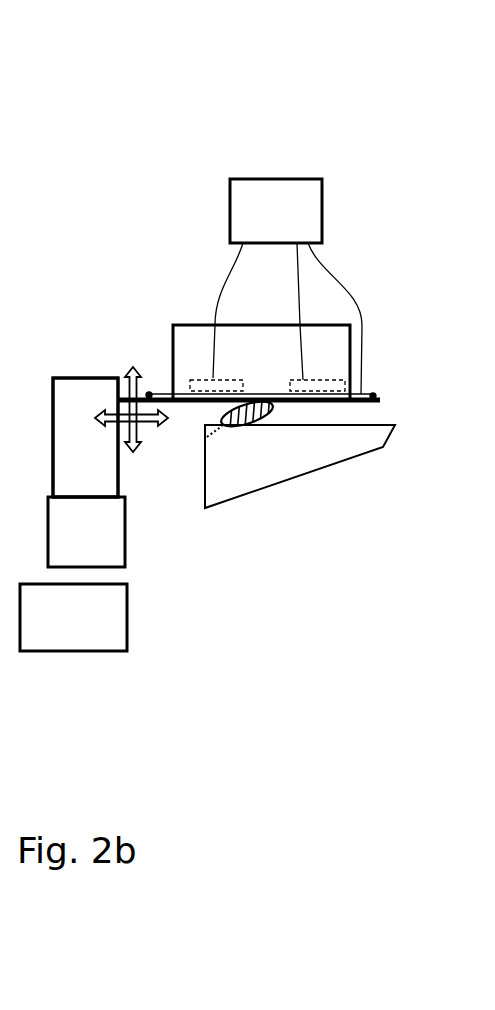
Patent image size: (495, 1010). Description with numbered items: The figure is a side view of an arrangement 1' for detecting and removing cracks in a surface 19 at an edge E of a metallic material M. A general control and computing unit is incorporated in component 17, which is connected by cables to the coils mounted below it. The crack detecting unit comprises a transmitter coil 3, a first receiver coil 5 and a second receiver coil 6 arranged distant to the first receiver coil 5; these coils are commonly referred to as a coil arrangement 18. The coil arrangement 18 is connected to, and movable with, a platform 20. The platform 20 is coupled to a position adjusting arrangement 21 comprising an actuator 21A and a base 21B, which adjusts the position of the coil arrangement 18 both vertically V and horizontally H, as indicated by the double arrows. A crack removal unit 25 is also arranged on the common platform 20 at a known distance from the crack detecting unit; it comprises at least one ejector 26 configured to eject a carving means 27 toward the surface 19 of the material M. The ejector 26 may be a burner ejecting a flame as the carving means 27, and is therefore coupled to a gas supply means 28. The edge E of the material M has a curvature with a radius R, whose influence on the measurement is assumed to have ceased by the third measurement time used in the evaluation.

The arrangement 1' is at (58, 71).
The component 17 is at (243, 215).
The coil arrangement 18 is at (349, 261).
The crack removal unit 25 is at (303, 325).
The first receiver coil 5 is at (228, 378).
The second receiver coil 6 is at (312, 380).
The platform 20 is at (386, 403).
The transmitter coil 3 is at (371, 392).
The ejector 26 is at (271, 414).
The carving means 27 is at (241, 433).
The metallic material M is at (363, 443).
The surface 19 is at (420, 423).
The edge E is at (196, 448).
The radius R is at (203, 432).
The horizontal direction H is at (150, 428).
The vertical direction V is at (150, 365).
The position adjusting arrangement 21 is at (103, 378).
The actuator 21A is at (85, 437).
The base 21B is at (86, 532).
The gas supply means 28 is at (103, 643).